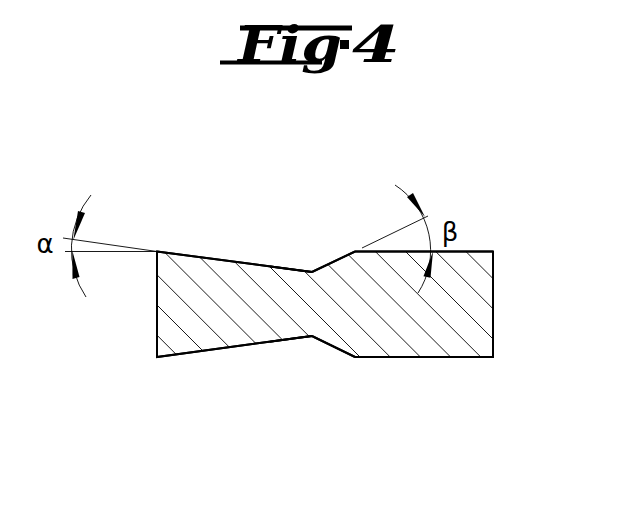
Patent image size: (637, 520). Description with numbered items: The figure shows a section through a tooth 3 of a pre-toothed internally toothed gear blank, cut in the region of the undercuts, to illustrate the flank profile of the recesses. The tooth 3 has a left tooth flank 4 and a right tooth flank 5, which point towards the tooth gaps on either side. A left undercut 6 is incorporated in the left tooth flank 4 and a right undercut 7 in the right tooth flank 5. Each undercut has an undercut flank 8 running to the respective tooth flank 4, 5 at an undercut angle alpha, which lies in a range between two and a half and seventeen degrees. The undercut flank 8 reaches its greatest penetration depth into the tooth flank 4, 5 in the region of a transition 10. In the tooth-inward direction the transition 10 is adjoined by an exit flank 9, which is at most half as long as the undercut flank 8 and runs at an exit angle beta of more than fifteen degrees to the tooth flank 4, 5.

The tooth 3 is at (472, 273).
The left tooth flank 4 is at (472, 358).
The right tooth flank 5 is at (472, 249).
The left undercut 6 is at (257, 352).
The right undercut 7 is at (256, 264).
The undercut flank 8 is at (282, 266).
The exit flank 9 is at (337, 260).
The transition 10 is at (312, 272).